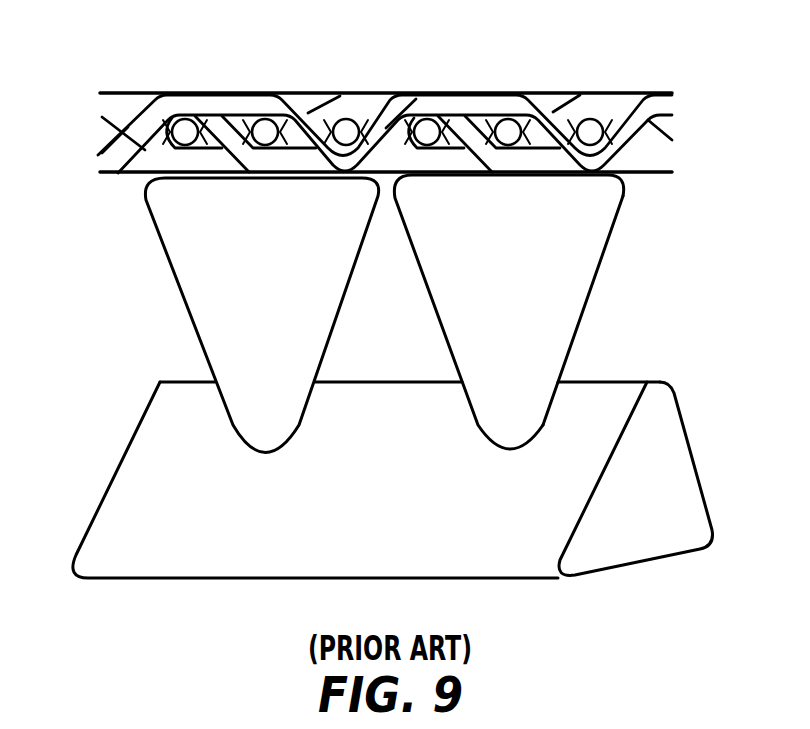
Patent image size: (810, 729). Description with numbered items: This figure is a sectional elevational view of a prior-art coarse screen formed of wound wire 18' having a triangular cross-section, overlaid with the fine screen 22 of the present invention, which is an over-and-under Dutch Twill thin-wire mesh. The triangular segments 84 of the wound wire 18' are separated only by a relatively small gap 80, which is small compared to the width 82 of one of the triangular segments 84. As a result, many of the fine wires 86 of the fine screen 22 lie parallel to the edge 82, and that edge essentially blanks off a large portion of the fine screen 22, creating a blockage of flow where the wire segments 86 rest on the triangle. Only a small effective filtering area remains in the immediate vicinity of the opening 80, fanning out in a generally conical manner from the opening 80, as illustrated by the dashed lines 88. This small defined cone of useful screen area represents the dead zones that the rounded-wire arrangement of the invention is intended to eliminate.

The fine screen 22 is at (203, 88).
The fine wires 86 is at (152, 96).
The dashed lines 88 is at (350, 112).
The wound wire 18' is at (393, 376).
The gap 80 is at (386, 190).
The width 82 is at (522, 177).
The triangular segments 84 is at (598, 317).